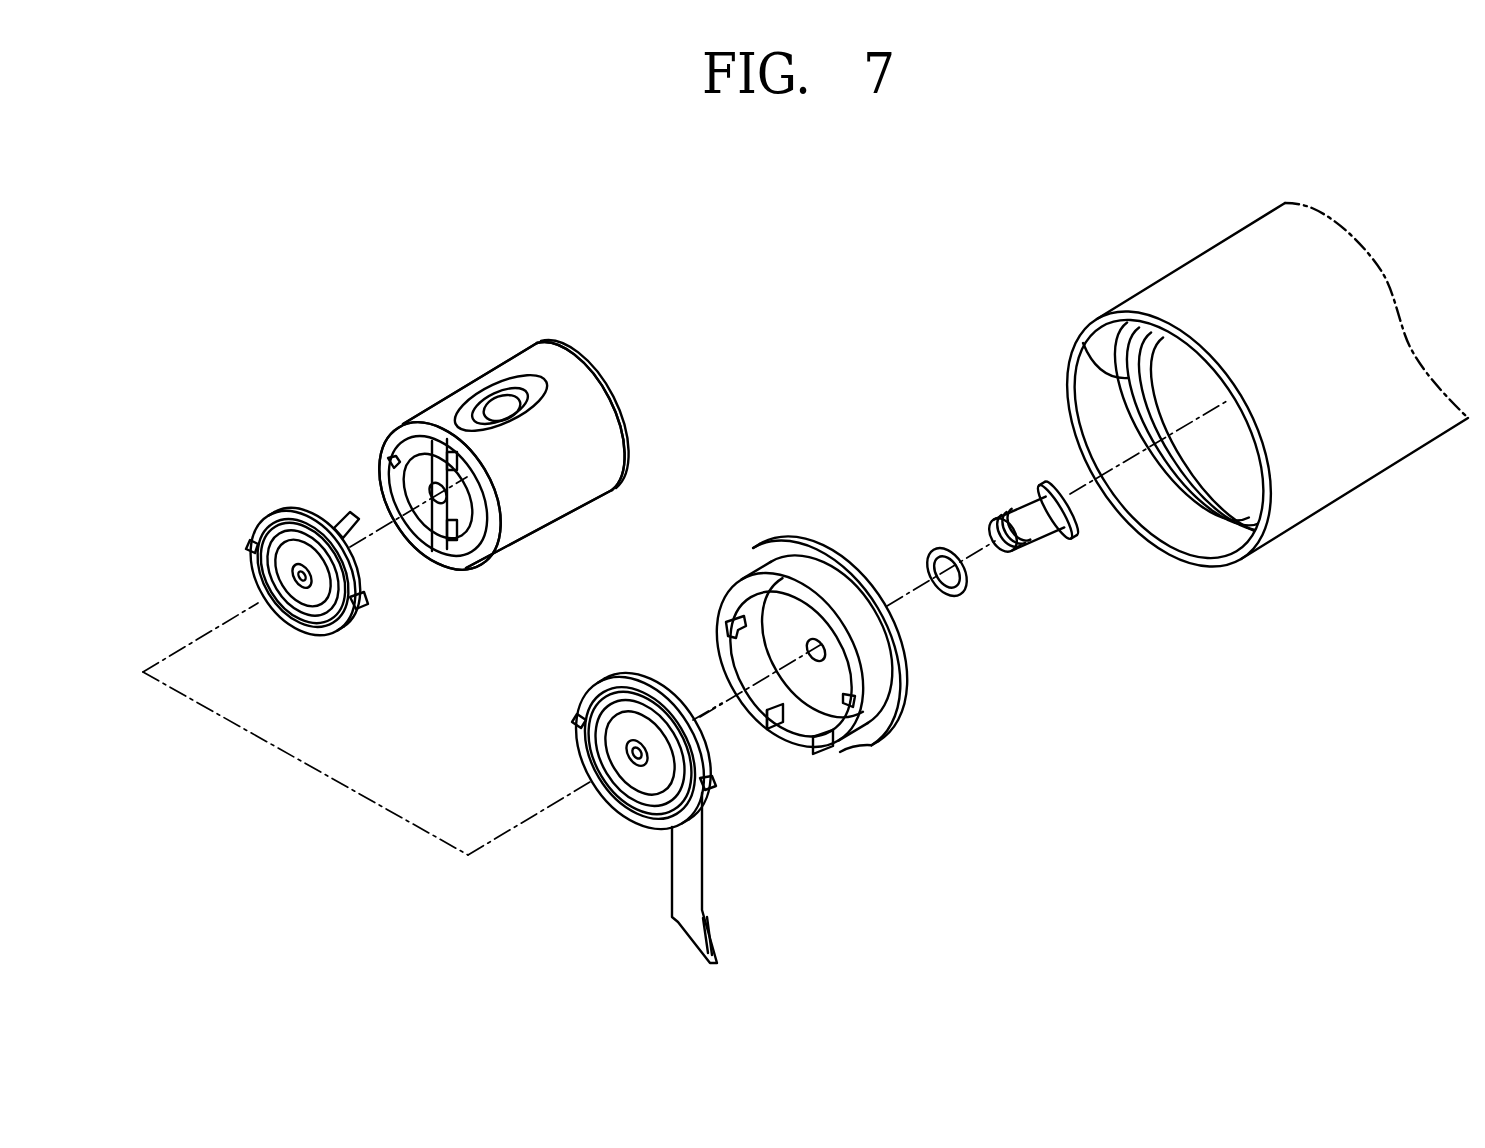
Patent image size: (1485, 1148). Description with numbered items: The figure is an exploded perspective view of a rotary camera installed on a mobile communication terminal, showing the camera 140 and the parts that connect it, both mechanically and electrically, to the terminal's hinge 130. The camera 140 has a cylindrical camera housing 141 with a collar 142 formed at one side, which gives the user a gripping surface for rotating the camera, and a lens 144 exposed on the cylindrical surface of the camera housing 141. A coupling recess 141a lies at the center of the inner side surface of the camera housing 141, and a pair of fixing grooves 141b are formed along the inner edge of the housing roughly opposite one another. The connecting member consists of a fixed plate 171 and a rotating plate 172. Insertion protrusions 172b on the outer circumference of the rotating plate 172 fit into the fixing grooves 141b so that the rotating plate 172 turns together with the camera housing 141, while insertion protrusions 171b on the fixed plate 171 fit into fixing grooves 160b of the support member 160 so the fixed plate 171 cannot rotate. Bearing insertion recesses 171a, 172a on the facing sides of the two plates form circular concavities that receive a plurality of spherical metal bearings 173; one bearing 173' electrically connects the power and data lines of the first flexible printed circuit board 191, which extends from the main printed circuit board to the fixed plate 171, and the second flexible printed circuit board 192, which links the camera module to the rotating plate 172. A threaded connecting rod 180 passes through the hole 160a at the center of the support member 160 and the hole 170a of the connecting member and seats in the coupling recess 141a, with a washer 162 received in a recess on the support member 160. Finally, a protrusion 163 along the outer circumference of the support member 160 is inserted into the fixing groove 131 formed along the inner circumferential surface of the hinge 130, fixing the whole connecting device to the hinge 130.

The hinge 130 is at (1170, 260).
The fixing groove 131 is at (1083, 343).
The camera 140 is at (492, 353).
The camera housing 141 is at (548, 498).
The coupling recess 141a is at (438, 502).
The fixing grooves 141b is at (393, 461).
The collar 142 is at (619, 404).
The lens 144 is at (478, 406).
The support member 160 is at (788, 566).
The hole 160a is at (838, 656).
The fixing grooves 160b is at (728, 626).
The washer 162 is at (937, 548).
The protrusion 163 is at (824, 556).
The hole 170a is at (305, 592).
The fixed plate 171 is at (615, 688).
The bearing insertion recesses 171a is at (296, 574).
The insertion protrusions 171b is at (713, 789).
The rotating plate 172 is at (290, 514).
The bearing insertion recesses 172a is at (342, 626).
The insertion protrusions 172b is at (247, 546).
The bearings 173 is at (607, 753).
The bearing 173' is at (645, 722).
The connecting rod 180 is at (1022, 512).
The first flexible printed circuit board 191 is at (700, 874).
The second flexible printed circuit board 192 is at (342, 513).